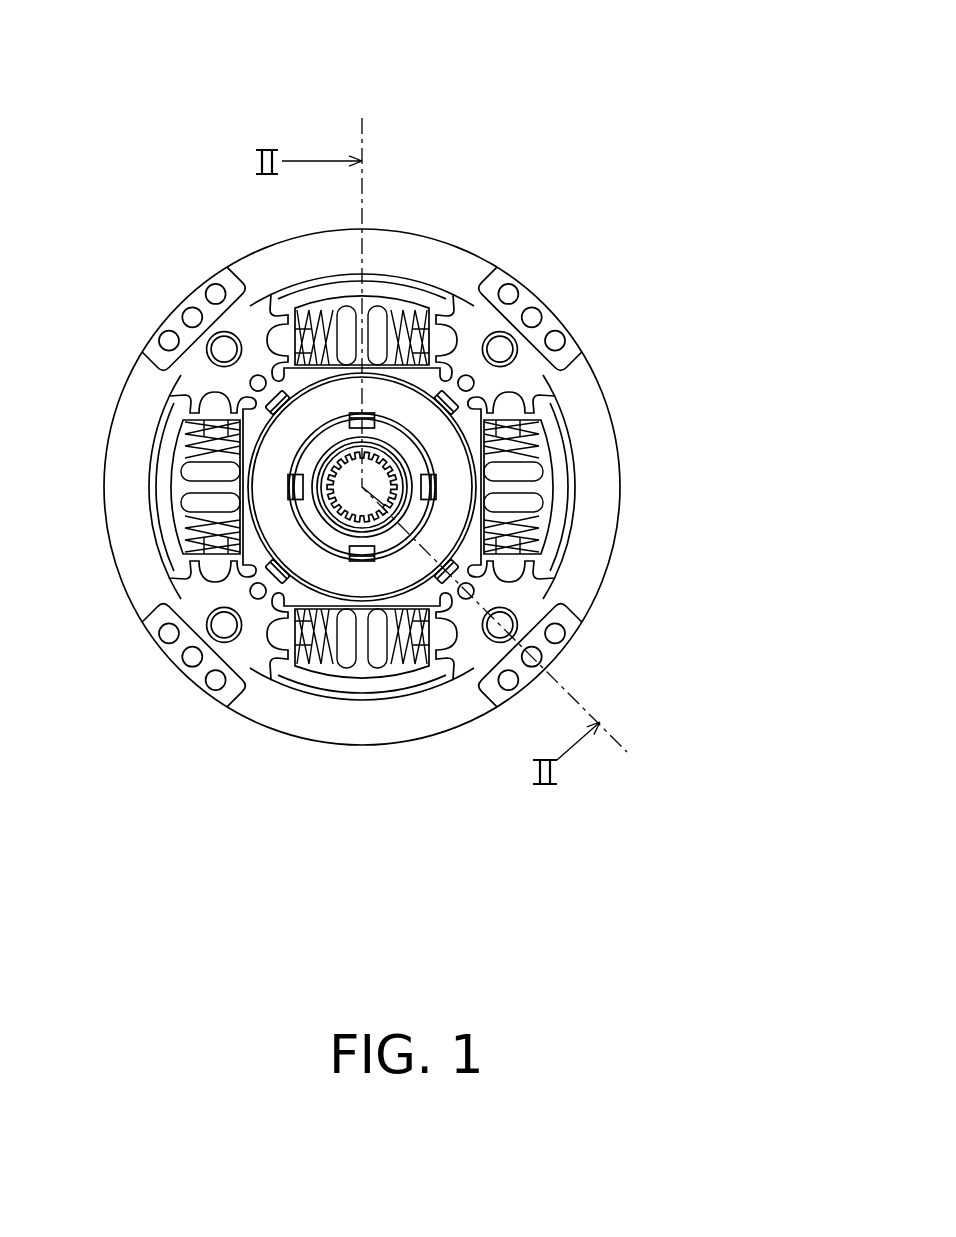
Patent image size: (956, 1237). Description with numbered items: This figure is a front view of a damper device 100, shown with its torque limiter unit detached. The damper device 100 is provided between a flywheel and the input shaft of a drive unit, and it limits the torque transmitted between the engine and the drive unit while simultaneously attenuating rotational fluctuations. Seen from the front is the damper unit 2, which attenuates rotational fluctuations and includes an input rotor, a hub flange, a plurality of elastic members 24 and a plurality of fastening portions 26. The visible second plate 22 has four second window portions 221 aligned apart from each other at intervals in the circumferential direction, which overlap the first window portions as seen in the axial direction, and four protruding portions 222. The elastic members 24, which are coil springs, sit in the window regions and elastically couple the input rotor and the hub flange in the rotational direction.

The damper device 100 is at (639, 99).
The damper unit 2 is at (438, 218).
The second plate 22 is at (610, 377).
The second window portions 221 is at (548, 502).
The protruding portions 222 is at (550, 320).
The elastic members 24 is at (548, 470).
The fastening portions 26 is at (510, 295).